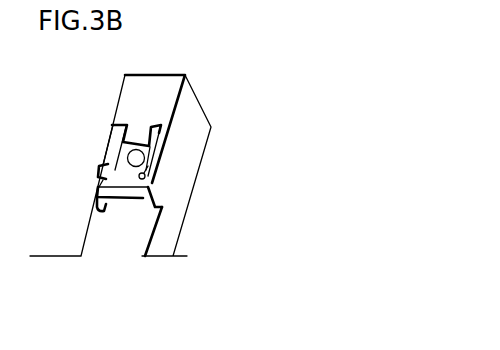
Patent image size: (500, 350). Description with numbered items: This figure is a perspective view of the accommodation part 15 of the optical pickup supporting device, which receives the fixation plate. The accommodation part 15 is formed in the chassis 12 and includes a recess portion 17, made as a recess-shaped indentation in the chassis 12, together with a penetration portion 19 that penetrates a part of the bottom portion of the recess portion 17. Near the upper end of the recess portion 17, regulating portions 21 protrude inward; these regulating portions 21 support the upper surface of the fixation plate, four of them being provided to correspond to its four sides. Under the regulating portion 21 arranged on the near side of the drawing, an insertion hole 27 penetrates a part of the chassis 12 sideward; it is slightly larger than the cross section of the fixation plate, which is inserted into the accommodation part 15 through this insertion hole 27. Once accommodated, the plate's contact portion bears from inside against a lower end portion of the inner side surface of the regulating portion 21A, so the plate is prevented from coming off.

The chassis 12 is at (120, 179).
The accommodation part 15 is at (262, 141).
The recess portion 17 is at (130, 182).
The penetration portion 19 is at (137, 158).
The regulating portions 21 is at (145, 132).
The regulating portion 21A is at (100, 209).
The insertion hole 27 is at (124, 209).